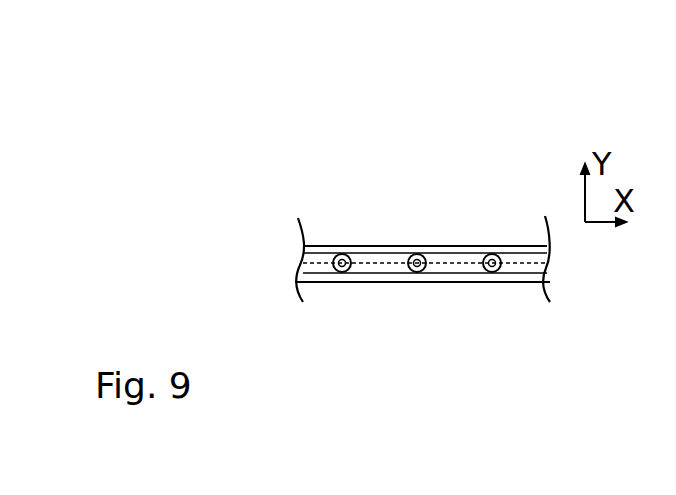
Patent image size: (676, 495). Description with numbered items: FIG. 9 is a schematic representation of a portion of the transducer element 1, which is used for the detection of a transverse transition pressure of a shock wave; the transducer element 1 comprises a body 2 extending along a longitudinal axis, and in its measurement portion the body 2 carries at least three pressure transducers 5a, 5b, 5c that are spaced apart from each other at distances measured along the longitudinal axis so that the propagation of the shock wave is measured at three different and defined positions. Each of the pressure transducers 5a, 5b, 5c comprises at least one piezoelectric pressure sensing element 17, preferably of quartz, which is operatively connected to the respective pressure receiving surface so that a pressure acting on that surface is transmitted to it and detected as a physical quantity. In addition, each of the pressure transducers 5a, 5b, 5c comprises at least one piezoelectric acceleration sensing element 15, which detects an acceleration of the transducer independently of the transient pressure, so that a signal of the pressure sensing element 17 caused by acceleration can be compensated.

The transducer element 1 is at (214, 120).
The body 2 is at (229, 176).
The pressure transducer 5a is at (341, 254).
The pressure transducer 5b is at (417, 254).
The pressure transducer 5c is at (492, 254).
The piezoelectric acceleration sensing element 15 is at (357, 282).
The piezoelectric pressure sensing element 17 is at (430, 280).